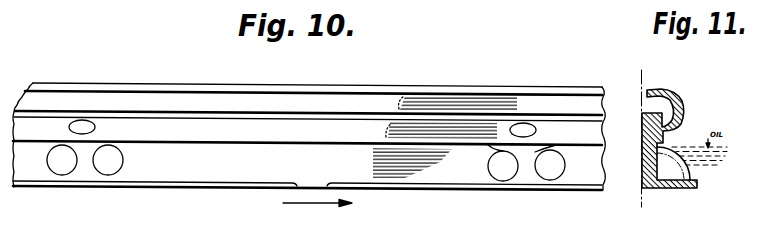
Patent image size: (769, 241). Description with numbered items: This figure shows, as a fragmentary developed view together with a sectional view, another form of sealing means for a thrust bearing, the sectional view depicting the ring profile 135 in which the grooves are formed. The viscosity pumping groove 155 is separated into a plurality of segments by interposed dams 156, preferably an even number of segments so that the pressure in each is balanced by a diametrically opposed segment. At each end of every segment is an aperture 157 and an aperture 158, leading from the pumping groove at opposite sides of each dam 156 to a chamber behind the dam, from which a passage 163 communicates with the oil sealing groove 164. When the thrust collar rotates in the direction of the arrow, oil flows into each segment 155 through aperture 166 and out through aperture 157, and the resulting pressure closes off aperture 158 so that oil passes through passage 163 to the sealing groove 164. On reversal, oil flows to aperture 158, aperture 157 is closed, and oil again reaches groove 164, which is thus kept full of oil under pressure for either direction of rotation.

In FIG. 10, the viscosity pumping groove 155 is at (424, 173).
In FIG. 10, the dam 156 is at (86, 170).
In FIG. 10, the aperture 157 is at (58, 166).
In FIG. 10, the aperture 158 is at (110, 172).
In FIG. 10, the passage 163 is at (94, 124).
In FIG. 10, the oil sealing groove 164 is at (480, 128).
In FIG. 11, the oil sealing groove 164 is at (646, 128).
In FIG. 10, the aperture 166 is at (313, 184).
In FIG. 11, the rail section 135 is at (648, 172).